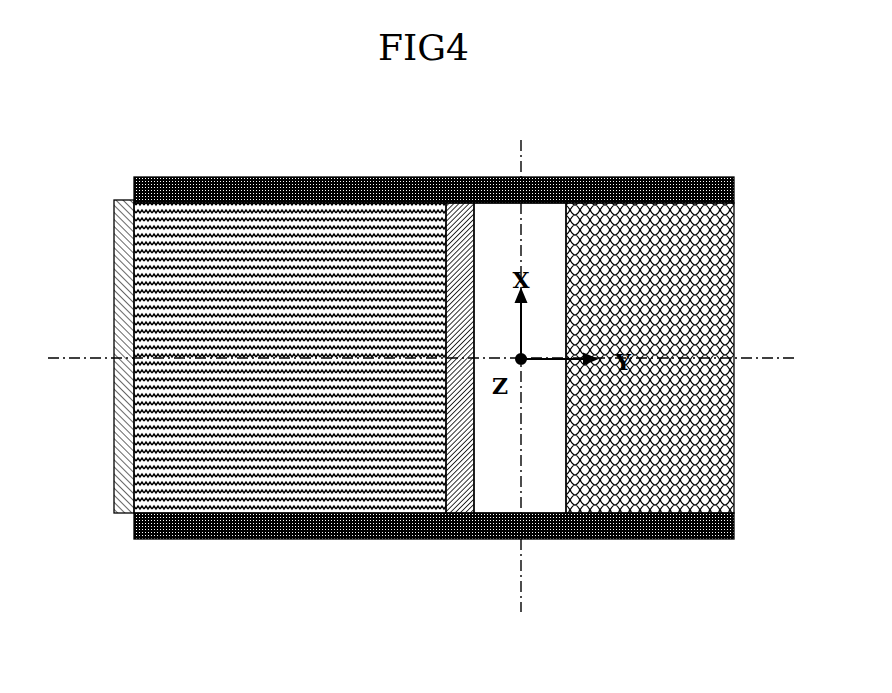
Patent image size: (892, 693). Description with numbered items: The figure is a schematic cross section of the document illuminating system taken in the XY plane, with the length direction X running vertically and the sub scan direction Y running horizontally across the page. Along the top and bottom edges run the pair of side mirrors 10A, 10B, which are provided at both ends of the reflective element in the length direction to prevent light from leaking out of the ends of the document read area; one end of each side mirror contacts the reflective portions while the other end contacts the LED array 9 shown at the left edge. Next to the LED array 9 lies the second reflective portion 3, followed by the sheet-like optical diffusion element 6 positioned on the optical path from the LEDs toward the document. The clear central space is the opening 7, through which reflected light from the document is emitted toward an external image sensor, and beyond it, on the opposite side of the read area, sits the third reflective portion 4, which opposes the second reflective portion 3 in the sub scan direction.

The side mirror 10A is at (375, 178).
The side mirror 10B is at (248, 517).
The LED array 9 is at (113, 487).
The second reflective portion 3 is at (330, 480).
The optical diffusion element 6 is at (474, 487).
The opening 7 is at (545, 222).
The third reflective portion 4 is at (643, 460).